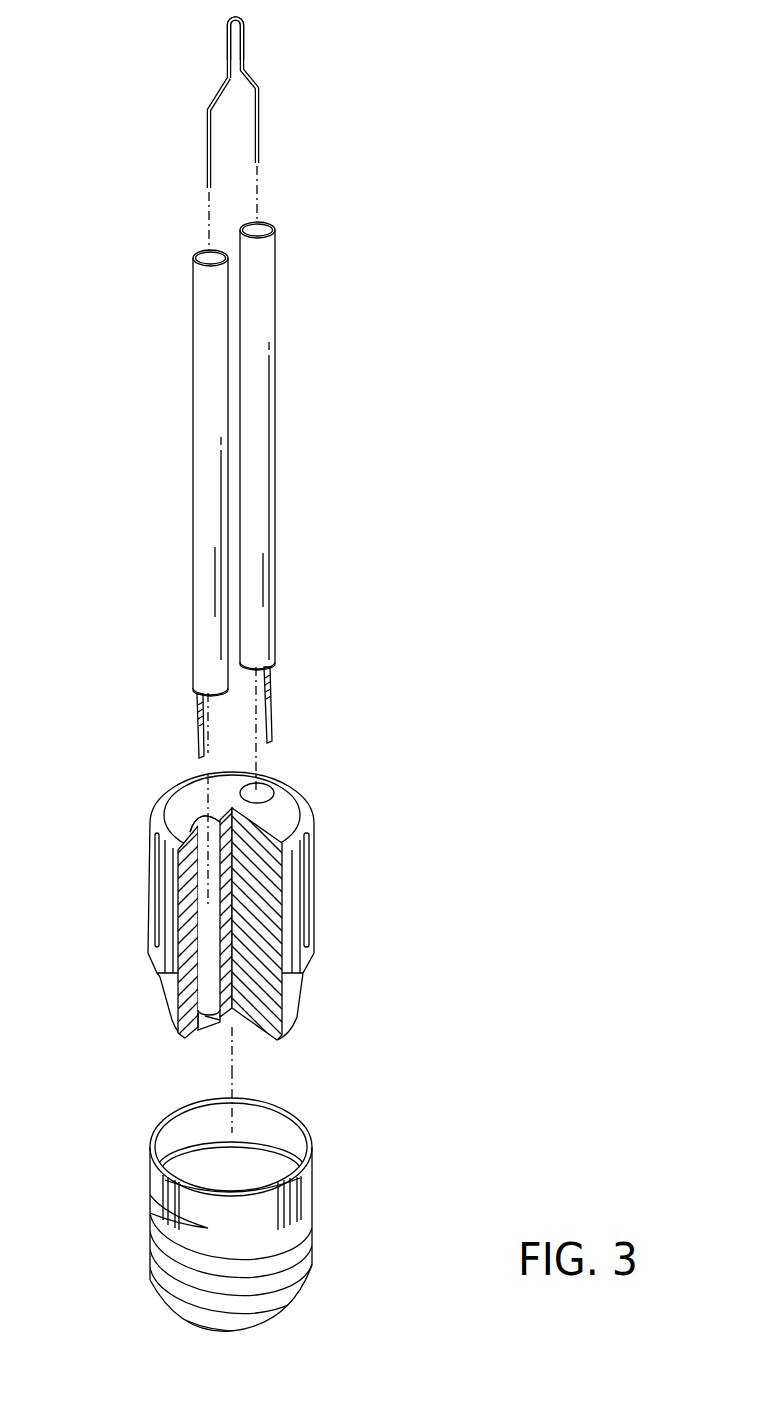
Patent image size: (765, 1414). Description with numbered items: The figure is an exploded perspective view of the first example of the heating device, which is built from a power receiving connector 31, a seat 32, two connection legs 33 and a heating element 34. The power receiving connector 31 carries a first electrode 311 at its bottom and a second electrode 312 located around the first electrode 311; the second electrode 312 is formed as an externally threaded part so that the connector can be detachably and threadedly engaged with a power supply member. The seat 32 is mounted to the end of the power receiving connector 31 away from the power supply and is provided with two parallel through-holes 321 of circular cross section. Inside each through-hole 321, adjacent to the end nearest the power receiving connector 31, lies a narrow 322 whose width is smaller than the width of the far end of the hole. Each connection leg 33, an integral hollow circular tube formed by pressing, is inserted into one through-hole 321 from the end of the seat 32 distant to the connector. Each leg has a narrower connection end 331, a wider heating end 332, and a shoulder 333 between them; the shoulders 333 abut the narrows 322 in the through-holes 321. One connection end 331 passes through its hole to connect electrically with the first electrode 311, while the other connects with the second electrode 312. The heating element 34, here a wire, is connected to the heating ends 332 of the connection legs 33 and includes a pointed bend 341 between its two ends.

The power receiving connector 31 is at (214, 1224).
The first electrode 311 is at (245, 1330).
The second electrode 312 is at (270, 1177).
The seat 32 is at (223, 951).
The through-holes 321 is at (197, 820).
The narrow 322 is at (213, 1018).
The connection legs 33 is at (237, 490).
The connection end 331 is at (197, 740).
The heating end 332 is at (258, 231).
The shoulder 333 is at (212, 690).
The heating element 34 is at (177, 135).
The pointed bend 341 is at (226, 28).